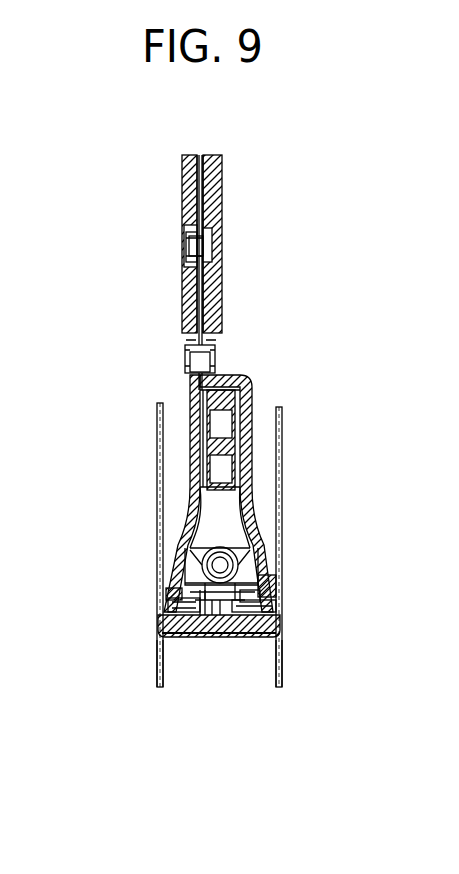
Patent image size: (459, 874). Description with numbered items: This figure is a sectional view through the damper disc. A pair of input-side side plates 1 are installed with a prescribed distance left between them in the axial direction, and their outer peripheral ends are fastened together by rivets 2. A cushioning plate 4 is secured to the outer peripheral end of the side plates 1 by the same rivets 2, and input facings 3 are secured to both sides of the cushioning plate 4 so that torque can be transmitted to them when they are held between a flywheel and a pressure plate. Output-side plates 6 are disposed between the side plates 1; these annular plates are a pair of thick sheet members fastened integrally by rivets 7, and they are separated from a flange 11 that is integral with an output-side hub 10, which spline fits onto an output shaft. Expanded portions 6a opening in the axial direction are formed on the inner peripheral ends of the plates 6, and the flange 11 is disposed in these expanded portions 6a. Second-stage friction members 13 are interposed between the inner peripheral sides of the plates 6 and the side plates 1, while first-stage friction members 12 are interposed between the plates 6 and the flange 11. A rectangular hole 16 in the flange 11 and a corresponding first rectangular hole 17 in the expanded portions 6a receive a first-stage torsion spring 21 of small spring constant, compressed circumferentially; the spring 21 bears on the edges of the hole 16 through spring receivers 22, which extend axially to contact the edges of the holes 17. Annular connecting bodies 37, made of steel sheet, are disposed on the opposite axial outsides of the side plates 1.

The input-side side plate 1 is at (190, 385).
The rivet 2 is at (185, 350).
The input facing 3 is at (182, 200).
The cushioning plate 4 is at (182, 275).
The output-side plate 6 is at (190, 515).
The expanded portion 6a is at (278, 612).
The rivet 7 is at (203, 473).
The output-side hub 10 is at (265, 640).
The flange 11 is at (215, 640).
The first-stage friction member 12 is at (185, 640).
The second-stage friction member 13 is at (162, 616).
The rectangular hole 16 is at (205, 640).
The first rectangular hole 17 is at (163, 598).
The first-stage torsion spring 21 is at (170, 580).
The spring receiver 22 is at (185, 557).
The annular connecting body 37 is at (157, 425).